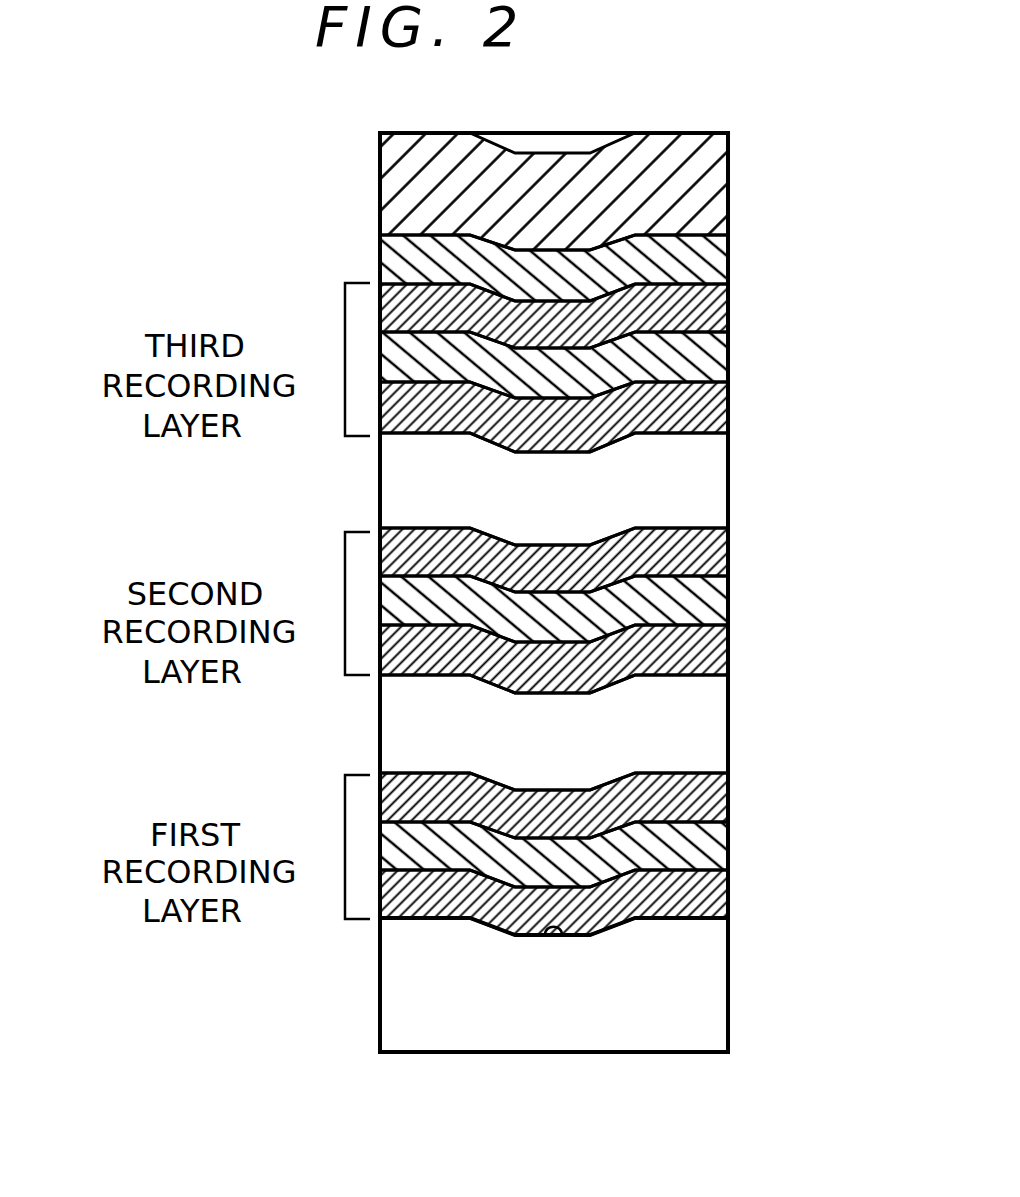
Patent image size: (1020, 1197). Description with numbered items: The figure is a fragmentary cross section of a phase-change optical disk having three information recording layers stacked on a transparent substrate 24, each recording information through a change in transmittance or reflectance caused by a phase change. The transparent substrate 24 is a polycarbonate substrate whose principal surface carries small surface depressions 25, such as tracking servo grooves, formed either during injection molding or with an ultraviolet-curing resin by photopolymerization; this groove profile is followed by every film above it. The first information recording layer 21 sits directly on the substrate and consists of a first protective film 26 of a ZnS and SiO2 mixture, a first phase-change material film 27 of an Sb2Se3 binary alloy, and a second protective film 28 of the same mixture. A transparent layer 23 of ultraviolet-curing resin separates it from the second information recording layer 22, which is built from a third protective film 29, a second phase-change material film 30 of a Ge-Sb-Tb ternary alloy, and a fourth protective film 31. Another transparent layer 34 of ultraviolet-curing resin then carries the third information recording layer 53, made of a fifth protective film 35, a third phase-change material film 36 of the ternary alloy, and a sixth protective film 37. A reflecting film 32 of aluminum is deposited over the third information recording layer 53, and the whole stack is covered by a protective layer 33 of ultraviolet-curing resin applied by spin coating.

The protective layer 33 is at (706, 192).
The reflecting film 32 is at (703, 256).
The sixth dielectric film or protective film 37 is at (697, 312).
The third phase-change material film 36 is at (697, 362).
The fifth dielectric film or protective film 35 is at (697, 413).
The transparent layer 34 is at (705, 480).
The fourth dielectric film or protective film 31 is at (697, 552).
The second phase-change material film 30 is at (690, 606).
The third dielectric film or protective film 29 is at (697, 656).
The transparent layer 23 is at (705, 730).
The second dielectric film or protective film 28 is at (697, 797).
The first phase-change material film 27 is at (697, 849).
The first dielectric film or protective film 26 is at (697, 894).
The transparent substrate 24 is at (708, 982).
The small surface depressions 25 is at (543, 938).
The third information recording layer 53 is at (336, 359).
The second information recording layer 22 is at (334, 603).
The first information recording layer 21 is at (334, 847).